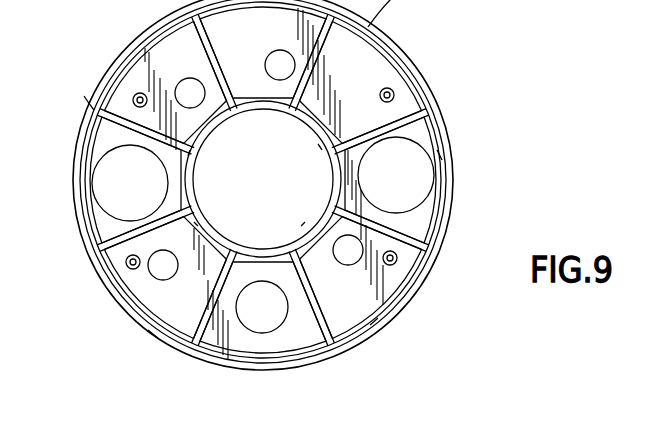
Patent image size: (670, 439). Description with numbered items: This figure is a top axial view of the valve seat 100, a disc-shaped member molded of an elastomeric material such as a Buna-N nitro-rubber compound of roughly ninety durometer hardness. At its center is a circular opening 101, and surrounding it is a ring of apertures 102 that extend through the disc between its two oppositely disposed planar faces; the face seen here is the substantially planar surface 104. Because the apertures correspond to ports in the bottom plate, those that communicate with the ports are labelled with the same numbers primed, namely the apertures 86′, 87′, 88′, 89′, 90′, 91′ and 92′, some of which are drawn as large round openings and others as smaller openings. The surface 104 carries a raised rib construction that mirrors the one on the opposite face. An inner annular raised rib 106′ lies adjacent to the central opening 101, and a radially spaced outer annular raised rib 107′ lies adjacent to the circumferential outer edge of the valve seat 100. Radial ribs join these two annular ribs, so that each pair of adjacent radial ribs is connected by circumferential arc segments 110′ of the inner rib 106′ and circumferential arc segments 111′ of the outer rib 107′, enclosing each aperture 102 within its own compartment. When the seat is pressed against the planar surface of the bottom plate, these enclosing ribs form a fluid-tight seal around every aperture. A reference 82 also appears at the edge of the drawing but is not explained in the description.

The fixture 82 is at (227, 13).
The valve seat 100 is at (399, 44).
The outer annular raised rib 107′ is at (411, 69).
The substantially planar surface 104 is at (417, 127).
The circumferential arc segments of outer annular rib 111′ is at (98, 99).
The apertures 102 is at (258, 226).
The central circular opening 101 is at (296, 201).
The inner annular raised rib 106′ is at (210, 117).
The circumferential arc segments of inner annular rib 110′ is at (193, 154).
The aperture 86′ is at (268, 325).
The aperture 87′ is at (186, 86).
The aperture 88′ is at (150, 262).
The aperture 89′ is at (141, 191).
The aperture 90′ is at (382, 190).
The aperture 91′ is at (358, 258).
The aperture 92′ is at (266, 65).